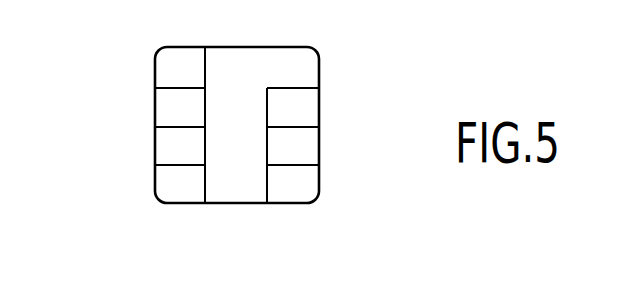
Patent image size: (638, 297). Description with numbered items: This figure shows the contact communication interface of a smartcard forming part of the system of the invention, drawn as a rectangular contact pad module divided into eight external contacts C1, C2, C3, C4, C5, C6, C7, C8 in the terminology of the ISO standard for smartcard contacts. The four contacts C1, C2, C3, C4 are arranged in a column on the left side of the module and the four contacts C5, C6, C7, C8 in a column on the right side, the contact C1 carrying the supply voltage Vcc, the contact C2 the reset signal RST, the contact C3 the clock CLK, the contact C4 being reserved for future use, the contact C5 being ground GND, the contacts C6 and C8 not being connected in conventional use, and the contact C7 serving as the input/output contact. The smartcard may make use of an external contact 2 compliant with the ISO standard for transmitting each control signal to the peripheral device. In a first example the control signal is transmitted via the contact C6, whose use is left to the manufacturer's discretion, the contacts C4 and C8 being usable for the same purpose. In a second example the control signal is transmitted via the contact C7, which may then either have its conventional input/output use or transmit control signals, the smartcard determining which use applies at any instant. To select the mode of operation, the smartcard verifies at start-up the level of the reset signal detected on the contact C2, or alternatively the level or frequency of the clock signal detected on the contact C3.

The external contact 2 is at (237, 63).
The external contact C1 is at (175, 73).
The external contact C2 is at (175, 111).
The external contact C3 is at (175, 150).
The external contact C4 is at (175, 188).
The external contact C5 is at (300, 73).
The external contact C6 is at (300, 111).
The external contact C7 is at (300, 150).
The external contact C8 is at (300, 188).